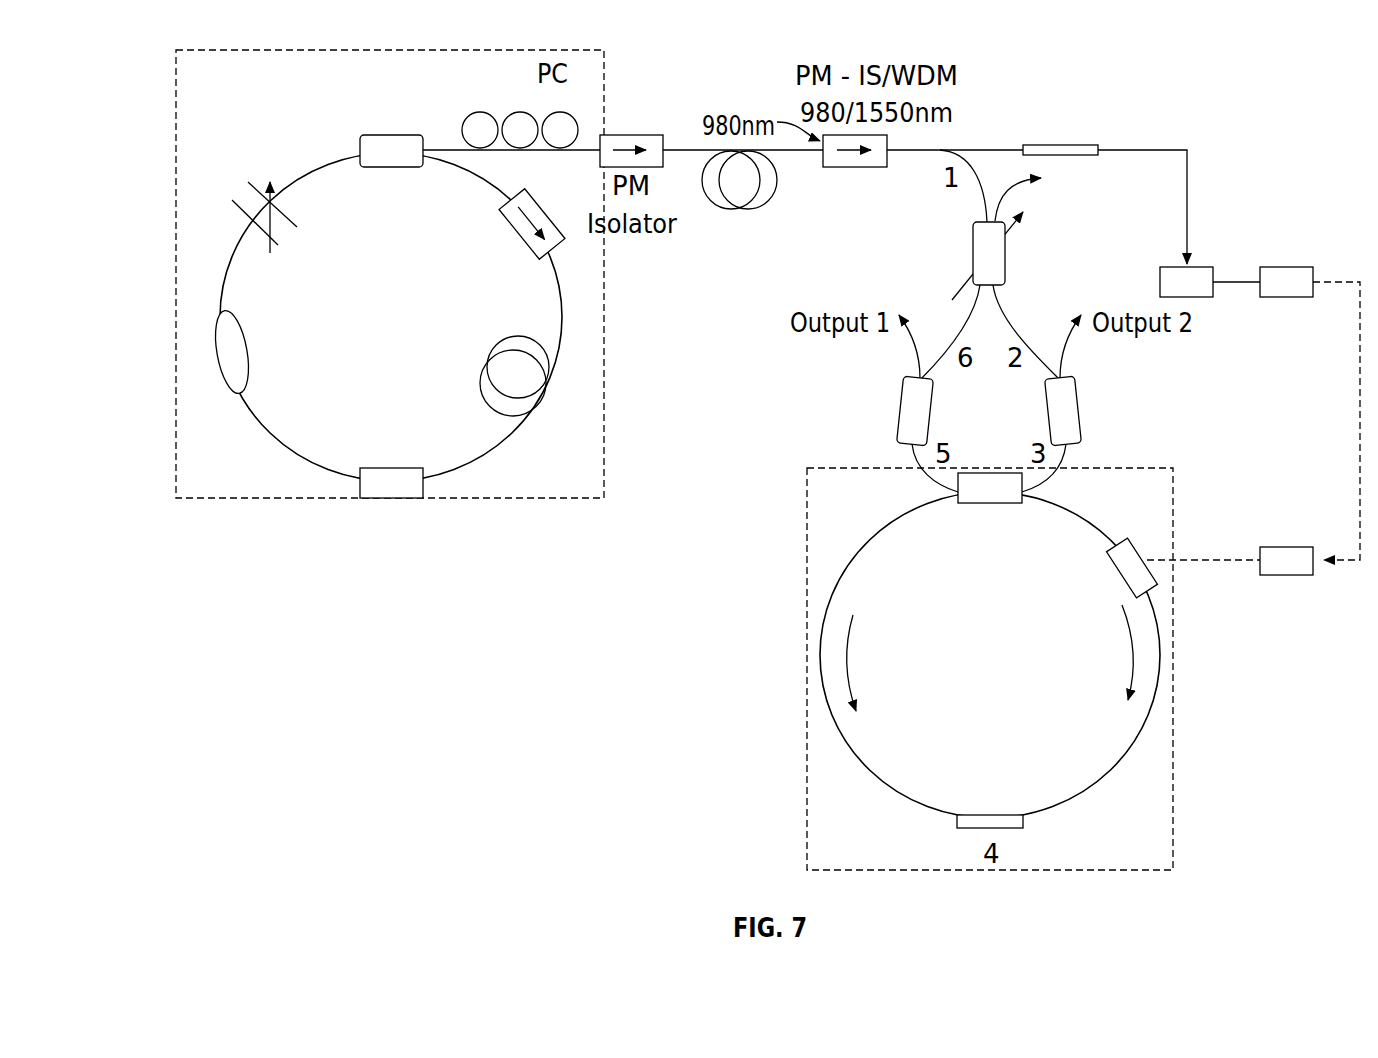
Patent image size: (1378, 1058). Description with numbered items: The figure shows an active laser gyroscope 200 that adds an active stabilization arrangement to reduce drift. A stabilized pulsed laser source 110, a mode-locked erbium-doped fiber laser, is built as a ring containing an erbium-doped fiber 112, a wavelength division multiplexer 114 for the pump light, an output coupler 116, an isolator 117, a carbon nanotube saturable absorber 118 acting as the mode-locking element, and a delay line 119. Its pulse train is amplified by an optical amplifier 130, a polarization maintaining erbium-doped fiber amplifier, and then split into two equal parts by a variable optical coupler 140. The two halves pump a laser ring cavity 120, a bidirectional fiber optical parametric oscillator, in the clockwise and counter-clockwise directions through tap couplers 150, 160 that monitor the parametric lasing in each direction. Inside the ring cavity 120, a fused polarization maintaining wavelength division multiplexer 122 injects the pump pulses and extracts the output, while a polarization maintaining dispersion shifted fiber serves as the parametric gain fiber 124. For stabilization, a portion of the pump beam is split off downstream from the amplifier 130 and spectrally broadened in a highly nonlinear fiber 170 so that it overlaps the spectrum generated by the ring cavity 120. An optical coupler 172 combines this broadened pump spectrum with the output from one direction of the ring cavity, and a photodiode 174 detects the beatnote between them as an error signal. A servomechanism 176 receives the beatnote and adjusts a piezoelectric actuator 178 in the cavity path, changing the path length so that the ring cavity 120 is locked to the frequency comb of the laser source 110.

The pulsed laser source 110 is at (187, 273).
The erbium-doped fiber 112 is at (488, 362).
The wavelength division multiplexer 114 is at (392, 490).
The output coupler 116 is at (420, 134).
The isolator 117 is at (503, 217).
The saturable absorber 118 is at (242, 362).
The delay line 119 is at (286, 196).
The laser ring cavity 120 is at (1160, 812).
The wavelength division multiplexer 122 is at (982, 475).
The parametric gain fiber 124 is at (1015, 826).
The optical amplifier 130 is at (780, 178).
The optical coupler 140 is at (973, 253).
The tap coupler 150 is at (902, 395).
The tap coupler 160 is at (1076, 395).
The highly nonlinear fiber 170 is at (1093, 145).
The optical coupler 172 is at (1202, 270).
The photodiode 174 is at (1300, 270).
The servomechanism 176 is at (1300, 550).
The piezoelectric actuator 178 is at (1122, 577).
The active laser gyroscope 200 is at (1203, 90).